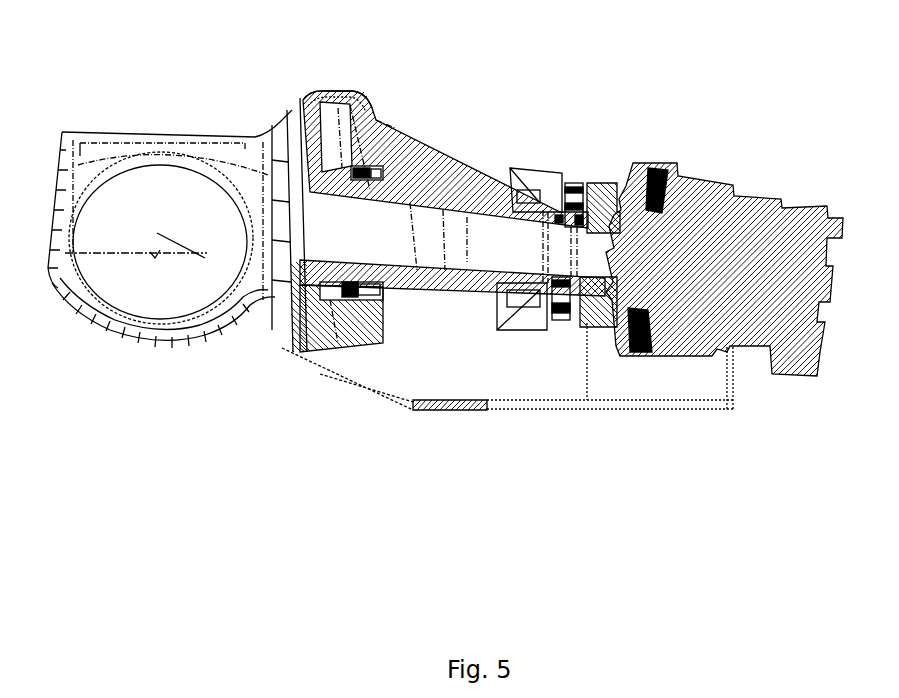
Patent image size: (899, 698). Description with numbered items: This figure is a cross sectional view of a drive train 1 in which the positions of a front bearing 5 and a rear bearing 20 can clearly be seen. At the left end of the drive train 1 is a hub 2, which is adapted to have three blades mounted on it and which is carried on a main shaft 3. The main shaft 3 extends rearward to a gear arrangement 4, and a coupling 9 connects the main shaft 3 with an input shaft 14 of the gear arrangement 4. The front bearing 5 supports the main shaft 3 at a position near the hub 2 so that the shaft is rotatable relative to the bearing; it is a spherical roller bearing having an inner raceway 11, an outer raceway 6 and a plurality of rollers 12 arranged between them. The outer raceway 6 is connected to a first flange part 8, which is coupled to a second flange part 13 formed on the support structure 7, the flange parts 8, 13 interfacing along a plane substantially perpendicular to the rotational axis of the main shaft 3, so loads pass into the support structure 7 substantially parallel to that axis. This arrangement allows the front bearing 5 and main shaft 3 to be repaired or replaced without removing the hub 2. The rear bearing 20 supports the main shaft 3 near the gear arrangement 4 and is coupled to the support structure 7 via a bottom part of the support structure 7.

The drive train 1 is at (557, 97).
The hub 2 is at (140, 328).
The main shaft 3 is at (445, 273).
The gear arrangement 4 is at (743, 217).
The front bearing 5 is at (392, 138).
The outer raceway 6 is at (383, 168).
The support structure 7 is at (373, 395).
The first flange part 8 is at (360, 123).
The coupling 9 is at (578, 177).
The inner raceway 11 is at (377, 180).
The rollers 12 is at (383, 175).
The second flange part 13 is at (343, 110).
The input shaft 14 is at (597, 293).
The rear bearing 20 is at (515, 333).